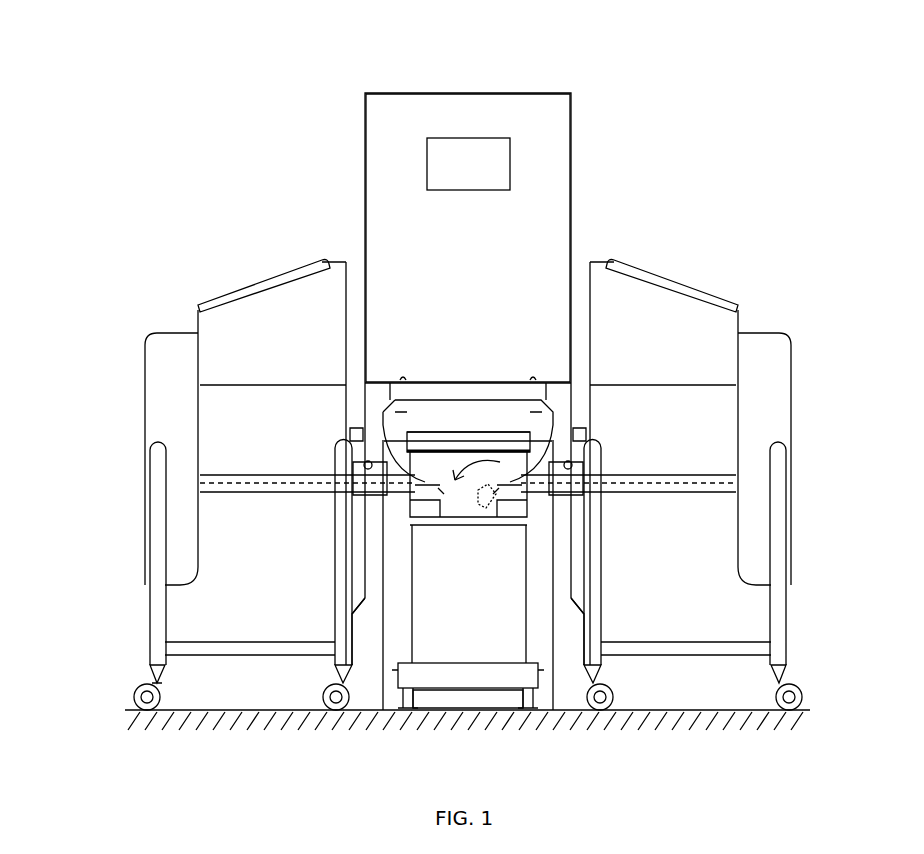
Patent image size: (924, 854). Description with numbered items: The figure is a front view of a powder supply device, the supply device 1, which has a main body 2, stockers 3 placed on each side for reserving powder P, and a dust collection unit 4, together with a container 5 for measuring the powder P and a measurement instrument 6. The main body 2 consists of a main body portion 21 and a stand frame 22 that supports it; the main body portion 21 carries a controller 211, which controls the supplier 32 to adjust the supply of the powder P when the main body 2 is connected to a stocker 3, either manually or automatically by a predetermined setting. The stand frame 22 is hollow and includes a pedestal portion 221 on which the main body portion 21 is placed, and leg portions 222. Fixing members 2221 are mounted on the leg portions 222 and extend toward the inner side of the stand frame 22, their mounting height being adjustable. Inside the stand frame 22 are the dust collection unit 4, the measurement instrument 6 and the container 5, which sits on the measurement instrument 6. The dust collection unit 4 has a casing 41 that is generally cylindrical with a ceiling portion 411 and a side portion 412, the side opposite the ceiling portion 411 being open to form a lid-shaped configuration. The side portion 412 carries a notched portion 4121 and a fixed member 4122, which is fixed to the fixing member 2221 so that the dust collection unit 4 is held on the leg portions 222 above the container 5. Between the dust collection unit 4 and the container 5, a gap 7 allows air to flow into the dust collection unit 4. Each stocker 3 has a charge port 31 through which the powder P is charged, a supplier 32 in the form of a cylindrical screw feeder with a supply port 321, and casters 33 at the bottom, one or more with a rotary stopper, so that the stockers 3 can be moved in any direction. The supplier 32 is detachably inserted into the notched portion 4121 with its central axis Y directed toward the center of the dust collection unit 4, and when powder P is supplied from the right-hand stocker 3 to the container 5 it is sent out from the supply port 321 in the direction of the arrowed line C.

The supply device 1 is at (858, 80).
The main body 2 is at (532, 82).
The main body portion 21 is at (424, 110).
The controller 211 is at (512, 160).
The stand frame 22 is at (548, 720).
The pedestal portion 221 is at (440, 400).
The leg portion 222 is at (365, 712).
The fixing member 2221 is at (340, 470).
The stocker 3 is at (252, 275).
The charge port 31 is at (215, 300).
The supplier 32 is at (350, 495).
The supply port 321 is at (472, 419).
The caster 33 is at (132, 694).
The dust collection unit 4 is at (520, 408).
The casing 41 is at (466, 414).
The ceiling portion 411 is at (421, 395).
The side portion 412 is at (432, 530).
The notched portion 4121 is at (415, 486).
The fixed member 4122 is at (352, 432).
The container 5 is at (442, 690).
The measurement instrument 6 is at (496, 712).
The gap 7 is at (560, 542).
The arrowed line C is at (474, 469).
The powder P is at (490, 512).
The central axis Y is at (233, 477).